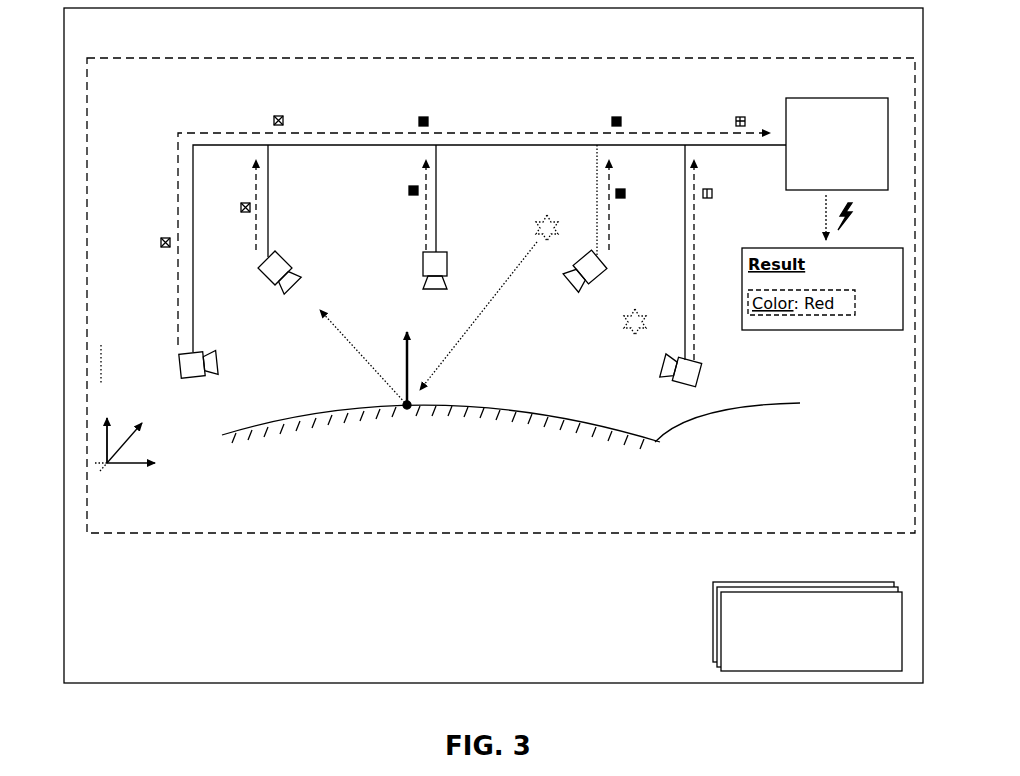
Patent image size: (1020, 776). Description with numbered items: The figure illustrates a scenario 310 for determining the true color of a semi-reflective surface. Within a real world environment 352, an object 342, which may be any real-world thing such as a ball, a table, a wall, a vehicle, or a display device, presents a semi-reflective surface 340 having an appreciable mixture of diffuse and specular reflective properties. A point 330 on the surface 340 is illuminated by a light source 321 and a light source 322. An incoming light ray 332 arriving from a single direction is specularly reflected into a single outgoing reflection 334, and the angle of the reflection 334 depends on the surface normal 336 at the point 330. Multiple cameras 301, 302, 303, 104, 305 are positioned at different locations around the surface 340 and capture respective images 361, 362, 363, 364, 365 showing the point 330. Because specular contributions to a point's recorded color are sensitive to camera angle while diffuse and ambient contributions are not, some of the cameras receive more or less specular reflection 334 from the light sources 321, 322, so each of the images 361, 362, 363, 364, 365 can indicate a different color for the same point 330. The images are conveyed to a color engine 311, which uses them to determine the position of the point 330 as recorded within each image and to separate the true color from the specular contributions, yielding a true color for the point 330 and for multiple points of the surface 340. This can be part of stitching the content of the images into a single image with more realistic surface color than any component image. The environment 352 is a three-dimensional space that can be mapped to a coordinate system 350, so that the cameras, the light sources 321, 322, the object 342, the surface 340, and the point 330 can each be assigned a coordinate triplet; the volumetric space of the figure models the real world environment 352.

The scenario 310 is at (250, 30).
The color engine 311 is at (837, 144).
The camera 301 is at (180, 360).
The camera 302 is at (286, 260).
The camera 303 is at (422, 262).
The camera 104 is at (604, 272).
The camera 305 is at (700, 366).
The light source 321 is at (532, 222).
The light source 322 is at (626, 332).
The point 330 is at (412, 404).
The light ray 332 is at (478, 328).
The reflection 334 is at (350, 340).
The surface normal 336 is at (404, 355).
The semi-reflective surface 340 is at (293, 420).
The object 342 is at (775, 417).
The coordinate system 350 is at (112, 468).
The real world environment 352 is at (397, 535).
The image 361 is at (160, 243).
The image 362 is at (273, 119).
The image 363 is at (418, 120).
The image 364 is at (611, 120).
The image 365 is at (735, 120).